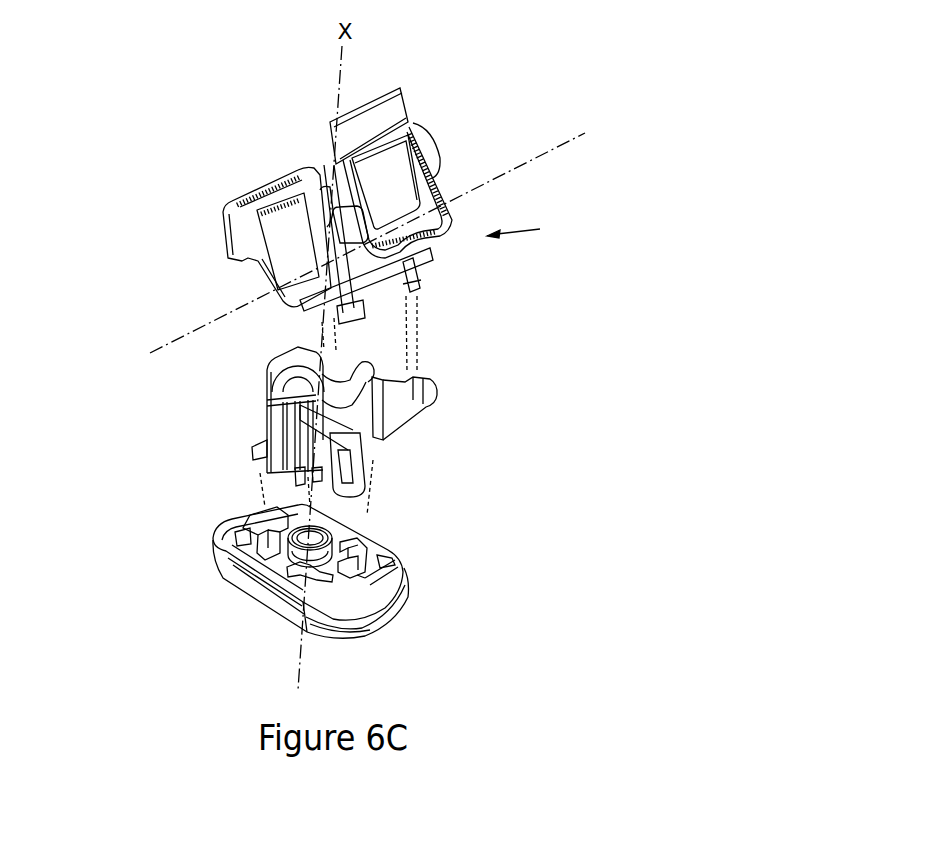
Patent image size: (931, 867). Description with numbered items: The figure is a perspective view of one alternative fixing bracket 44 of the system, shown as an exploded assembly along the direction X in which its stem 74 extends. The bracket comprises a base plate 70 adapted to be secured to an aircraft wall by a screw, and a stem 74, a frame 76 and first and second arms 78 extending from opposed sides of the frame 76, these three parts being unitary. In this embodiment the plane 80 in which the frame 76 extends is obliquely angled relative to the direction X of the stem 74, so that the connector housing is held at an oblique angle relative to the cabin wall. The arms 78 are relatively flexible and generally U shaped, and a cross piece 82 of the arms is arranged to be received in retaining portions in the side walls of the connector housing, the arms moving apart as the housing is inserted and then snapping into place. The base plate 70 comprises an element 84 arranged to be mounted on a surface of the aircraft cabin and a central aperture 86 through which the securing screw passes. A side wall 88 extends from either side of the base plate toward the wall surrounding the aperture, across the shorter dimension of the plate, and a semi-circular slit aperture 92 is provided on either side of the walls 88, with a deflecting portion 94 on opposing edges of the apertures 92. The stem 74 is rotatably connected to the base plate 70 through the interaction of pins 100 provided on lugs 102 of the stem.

The fixing bracket 44 is at (529, 229).
The base plate 70 is at (248, 518).
The stem 74 is at (266, 388).
The frame 76 is at (293, 164).
The first and second arms 78 is at (226, 227).
The plane 80 is at (537, 155).
The cross piece 82 is at (352, 110).
The element 84 is at (238, 583).
The central aperture 86 is at (340, 522).
The side wall 88 is at (336, 578).
The semi-circular slit aperture 92 is at (238, 538).
The deflecting portion 94 is at (375, 602).
The pins 100 is at (360, 500).
The lugs 102 is at (356, 466).